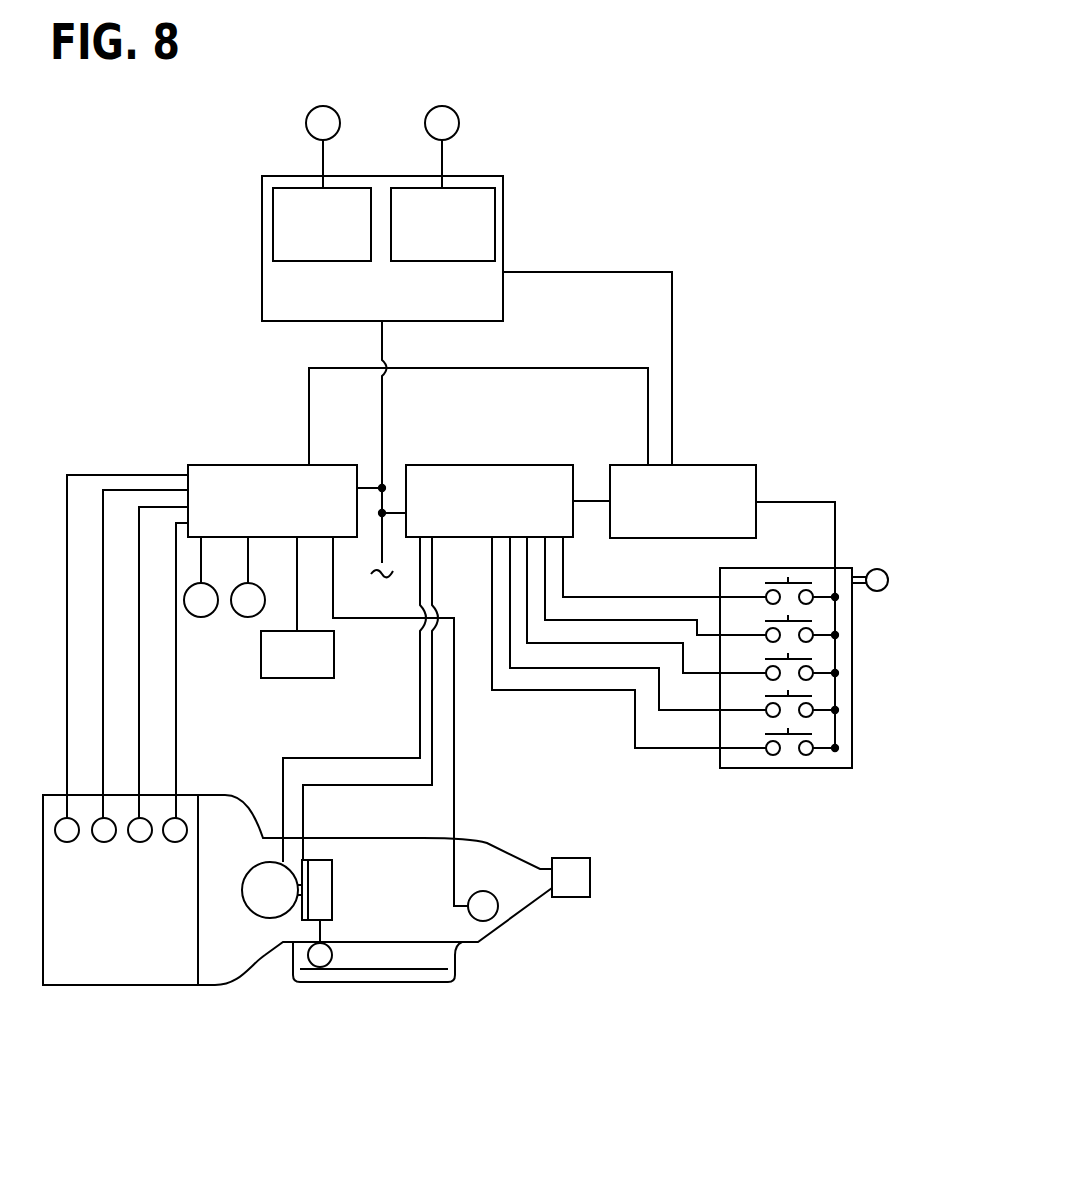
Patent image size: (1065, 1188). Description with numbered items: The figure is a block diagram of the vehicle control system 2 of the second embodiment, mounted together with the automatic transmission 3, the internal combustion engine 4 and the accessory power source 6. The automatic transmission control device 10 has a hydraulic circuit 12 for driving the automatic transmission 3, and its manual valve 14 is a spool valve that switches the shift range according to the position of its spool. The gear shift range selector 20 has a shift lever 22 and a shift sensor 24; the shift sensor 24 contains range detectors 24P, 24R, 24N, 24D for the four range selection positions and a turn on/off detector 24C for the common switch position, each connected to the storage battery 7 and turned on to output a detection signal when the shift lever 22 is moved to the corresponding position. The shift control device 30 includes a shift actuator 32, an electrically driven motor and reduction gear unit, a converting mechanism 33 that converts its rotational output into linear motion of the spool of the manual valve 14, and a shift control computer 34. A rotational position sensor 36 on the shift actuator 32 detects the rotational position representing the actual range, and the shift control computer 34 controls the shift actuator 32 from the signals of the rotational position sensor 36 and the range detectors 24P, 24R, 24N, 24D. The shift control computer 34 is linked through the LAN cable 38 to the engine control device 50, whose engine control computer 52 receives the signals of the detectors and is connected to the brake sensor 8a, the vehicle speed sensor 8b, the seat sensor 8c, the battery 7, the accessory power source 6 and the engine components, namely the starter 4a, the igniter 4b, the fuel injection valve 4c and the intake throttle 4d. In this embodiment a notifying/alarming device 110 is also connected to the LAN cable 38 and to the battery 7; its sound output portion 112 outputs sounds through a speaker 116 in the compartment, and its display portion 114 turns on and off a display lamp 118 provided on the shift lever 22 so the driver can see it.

The vehicle control system 2 is at (778, 177).
The automatic transmission 3 is at (218, 986).
The internal combustion engine 4 is at (124, 906).
The starter 4a is at (74, 817).
The igniter 4b is at (110, 817).
The fuel injection valve 4c is at (146, 817).
The intake throttle 4d is at (182, 817).
The accessory power source 6 is at (297, 678).
The storage battery 7 is at (712, 465).
The brake sensor 8a is at (248, 617).
The vehicle speed sensor 8b is at (498, 917).
The seat sensor 8c is at (201, 617).
The automatic transmission control device 10 is at (441, 982).
The hydraulic circuit 12 is at (375, 970).
The manual valve 14 is at (325, 967).
The gear shift range selector 20 is at (910, 495).
The shift lever 22 is at (881, 568).
The shift sensor 24 is at (843, 568).
The range detector 24P is at (810, 603).
The range detector 24R is at (810, 641).
The range detector 24N is at (810, 679).
The range detector 24D is at (810, 716).
The turn on/off detector 24C is at (810, 754).
The shift control device 30 is at (534, 461).
The shift actuator 32 is at (267, 915).
The converting mechanism 33 is at (322, 867).
The shift control computer 34 is at (458, 537).
The rotational position sensor 36 is at (310, 860).
The LAN cable 38 is at (385, 416).
The engine control device 50 is at (234, 461).
The engine control computer 52 is at (345, 537).
The notifying/alarming device 110 is at (506, 186).
The sound output portion 112 is at (273, 222).
The display portion 114 is at (497, 222).
The speaker 116 is at (306, 125).
The display lamp 118 is at (459, 125).